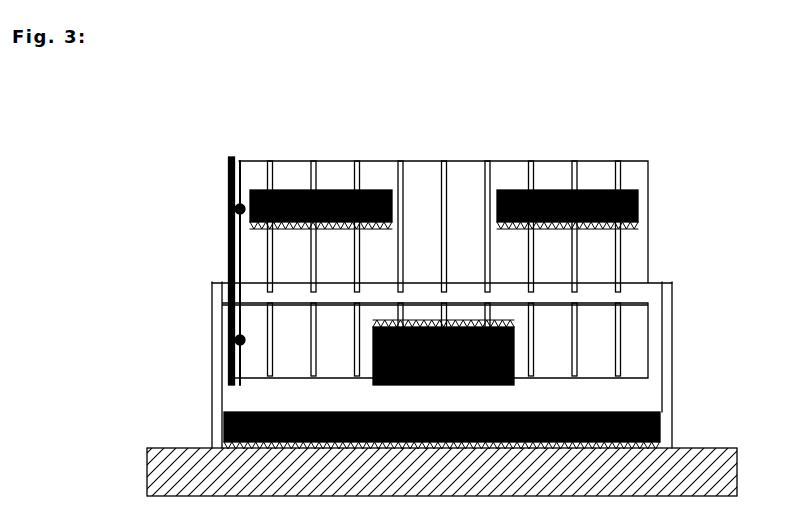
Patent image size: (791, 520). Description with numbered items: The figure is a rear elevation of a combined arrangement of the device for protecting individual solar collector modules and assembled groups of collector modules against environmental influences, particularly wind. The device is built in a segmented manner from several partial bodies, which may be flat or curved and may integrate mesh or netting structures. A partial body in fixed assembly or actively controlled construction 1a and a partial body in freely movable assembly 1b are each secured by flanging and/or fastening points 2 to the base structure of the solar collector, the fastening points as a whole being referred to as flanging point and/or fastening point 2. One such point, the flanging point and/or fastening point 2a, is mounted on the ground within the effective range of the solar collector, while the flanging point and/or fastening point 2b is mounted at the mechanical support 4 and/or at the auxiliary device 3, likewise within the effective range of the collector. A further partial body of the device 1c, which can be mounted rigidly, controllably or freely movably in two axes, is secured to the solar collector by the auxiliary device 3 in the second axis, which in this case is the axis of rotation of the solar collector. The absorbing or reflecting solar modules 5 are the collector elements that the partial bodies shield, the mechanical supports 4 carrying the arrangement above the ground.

The partial body of the device, fixedly mounted and/or actively controllable 1a is at (444, 194).
The partial body of the device, mounted so as to be freely movable 1b is at (514, 345).
The partial body of the device, mounted in two axes 1c is at (228, 250).
The flanging point and/or fastening point 2 is at (392, 227).
The flanging point and/or fastening point mounted on ground 2a is at (662, 432).
The flanging point and/or fastening point mounted at mechanical support and/or auxil 2b is at (241, 204).
The auxiliary device 3 is at (227, 280).
The mechanical support 4 is at (215, 336).
The absorbing or reflecting solar module 5 is at (429, 178).